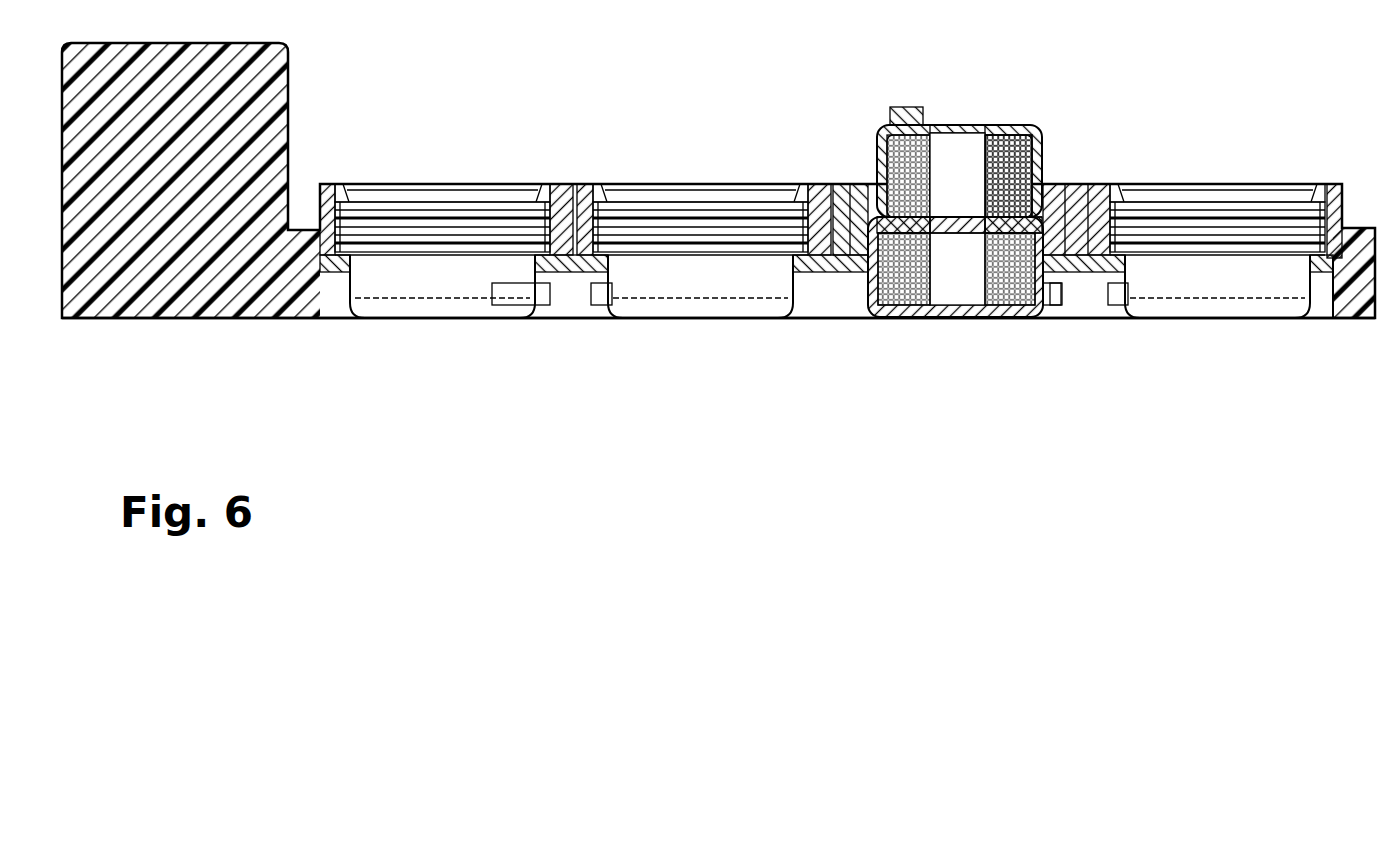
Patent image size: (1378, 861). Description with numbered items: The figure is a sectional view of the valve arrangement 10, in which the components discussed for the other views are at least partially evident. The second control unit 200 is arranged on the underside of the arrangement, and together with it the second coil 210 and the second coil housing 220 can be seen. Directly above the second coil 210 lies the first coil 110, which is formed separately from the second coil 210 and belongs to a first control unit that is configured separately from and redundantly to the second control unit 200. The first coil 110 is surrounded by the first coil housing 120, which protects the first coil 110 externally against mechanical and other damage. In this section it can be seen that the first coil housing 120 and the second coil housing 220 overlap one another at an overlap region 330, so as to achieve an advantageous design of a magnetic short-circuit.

The valve arrangement 10 is at (1259, 430).
The first coil 110 is at (928, 152).
The first coil housing 120 is at (884, 162).
The second control unit 200 is at (276, 290).
The second coil 210 is at (1012, 292).
The second coil housing 220 is at (868, 294).
The overlap region 330 is at (1030, 205).